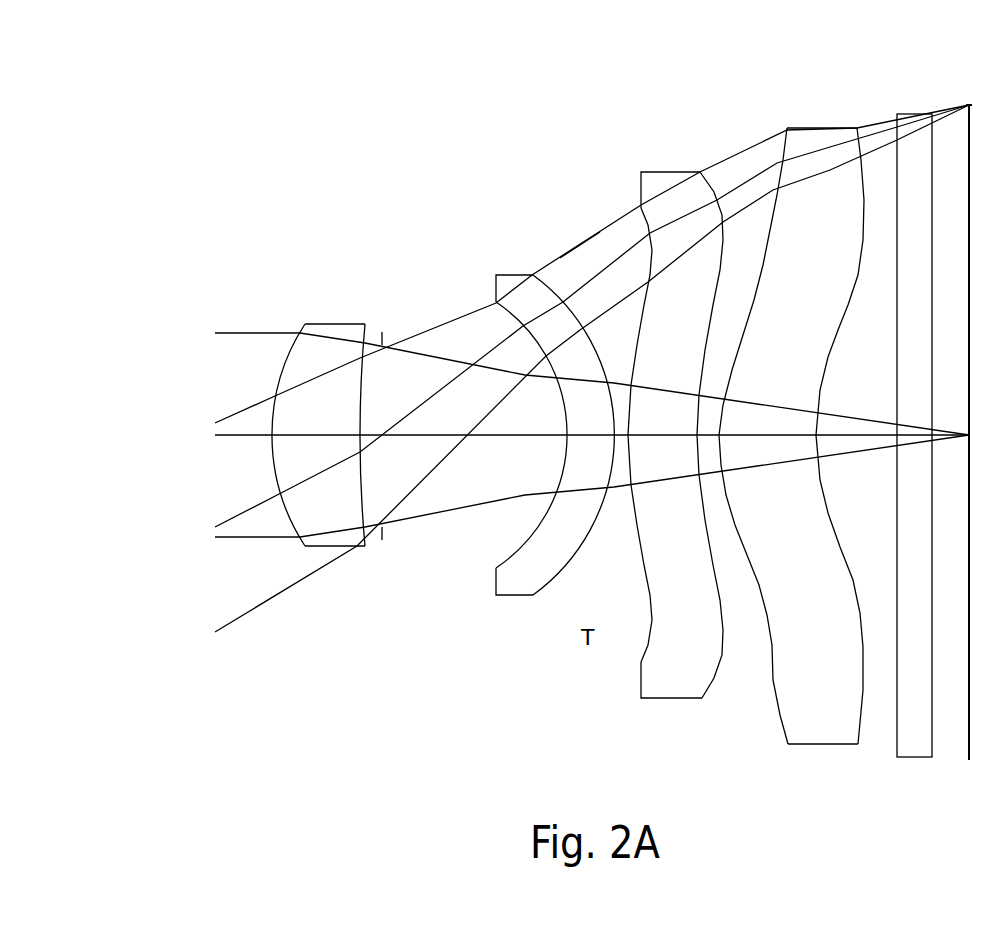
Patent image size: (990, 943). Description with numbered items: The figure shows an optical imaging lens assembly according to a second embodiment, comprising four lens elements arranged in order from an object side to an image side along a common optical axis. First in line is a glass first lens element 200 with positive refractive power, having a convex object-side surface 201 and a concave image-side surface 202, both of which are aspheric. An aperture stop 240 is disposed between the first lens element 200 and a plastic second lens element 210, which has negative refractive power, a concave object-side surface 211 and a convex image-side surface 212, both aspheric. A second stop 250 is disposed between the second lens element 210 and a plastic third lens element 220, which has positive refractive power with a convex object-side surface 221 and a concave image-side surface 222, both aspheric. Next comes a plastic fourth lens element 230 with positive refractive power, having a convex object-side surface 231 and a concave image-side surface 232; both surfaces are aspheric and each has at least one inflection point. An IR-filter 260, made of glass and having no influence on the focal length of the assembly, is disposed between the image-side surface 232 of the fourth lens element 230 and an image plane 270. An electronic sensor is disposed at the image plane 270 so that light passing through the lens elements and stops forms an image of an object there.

The first lens element 200 is at (258, 404).
The object-side surface 201 is at (265, 462).
The image-side surface 202 is at (353, 475).
The second lens element 210 is at (526, 420).
The object-side surface 211 is at (547, 506).
The image-side surface 212 is at (603, 507).
The third lens element 220 is at (654, 431).
The object-side surface 221 is at (638, 533).
The image-side surface 222 is at (708, 580).
The fourth lens element 230 is at (791, 431).
The object-side surface 231 is at (757, 547).
The image-side surface 232 is at (853, 593).
The aperture stop 240 is at (384, 332).
The second stop 250 is at (587, 244).
The IR-filter 260 is at (919, 212).
The image plane 270 is at (967, 170).